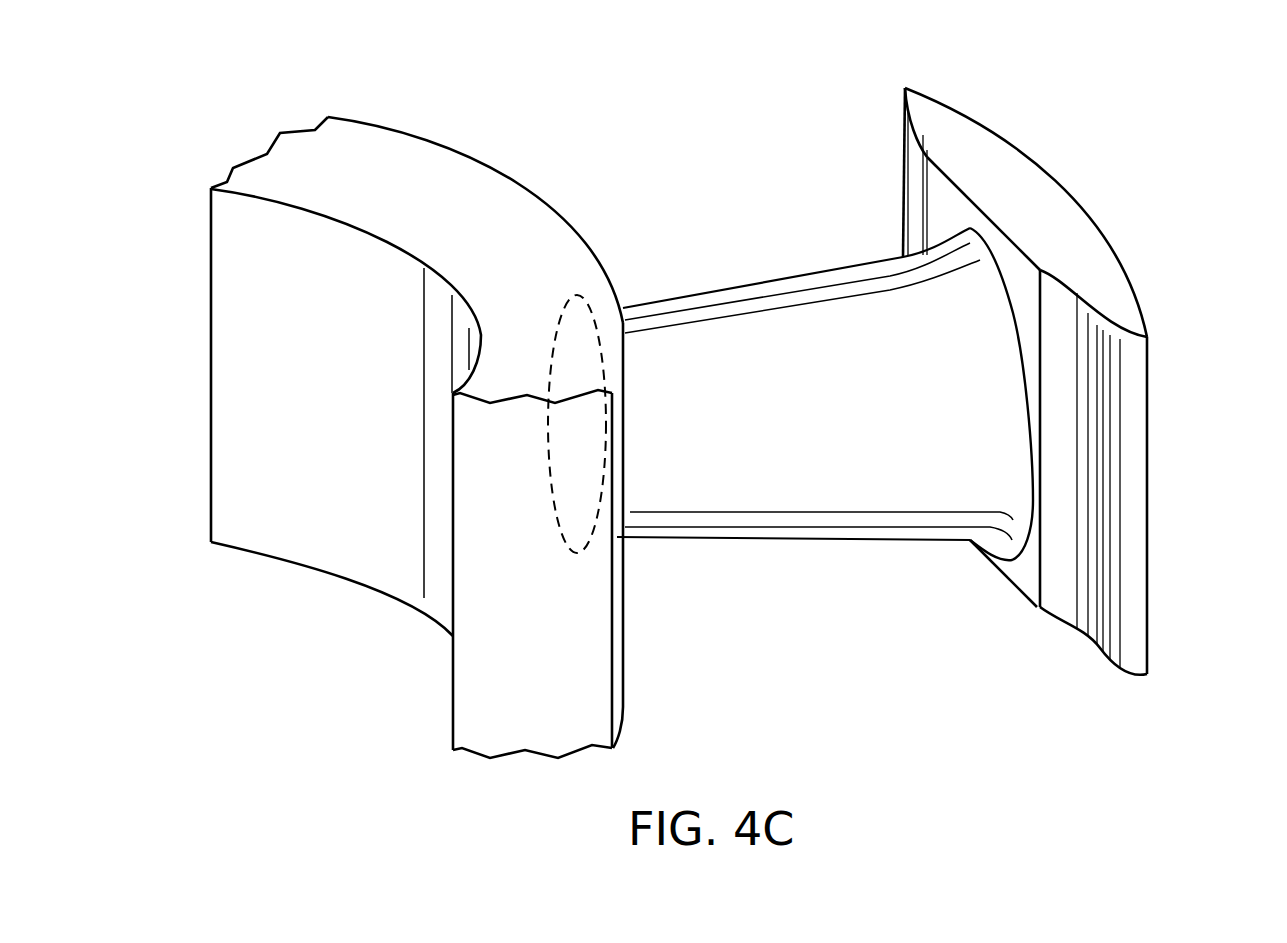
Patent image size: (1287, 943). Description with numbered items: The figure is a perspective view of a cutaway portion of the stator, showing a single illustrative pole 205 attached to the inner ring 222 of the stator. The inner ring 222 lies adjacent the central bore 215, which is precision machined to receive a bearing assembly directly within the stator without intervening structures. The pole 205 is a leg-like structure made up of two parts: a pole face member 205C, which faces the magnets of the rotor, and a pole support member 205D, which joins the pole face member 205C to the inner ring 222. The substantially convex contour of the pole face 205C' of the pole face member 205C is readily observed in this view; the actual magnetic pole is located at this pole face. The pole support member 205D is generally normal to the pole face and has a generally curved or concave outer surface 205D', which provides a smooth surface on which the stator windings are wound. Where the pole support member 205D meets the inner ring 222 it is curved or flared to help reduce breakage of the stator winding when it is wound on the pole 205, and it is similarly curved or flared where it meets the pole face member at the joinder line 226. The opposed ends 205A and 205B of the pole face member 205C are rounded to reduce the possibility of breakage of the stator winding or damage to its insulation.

The pole 205 is at (1150, 473).
The opposed end of pole face member 205A is at (905, 87).
The opposed end of pole face member 205B is at (1150, 370).
The pole face member 205C is at (1125, 440).
The pole face 205C' is at (1026, 212).
The pole support member 205D is at (815, 582).
The outer surface 205D' is at (801, 419).
The central bore 215 is at (352, 552).
The inner ring 222 is at (438, 172).
The joinder line 226 is at (1003, 265).